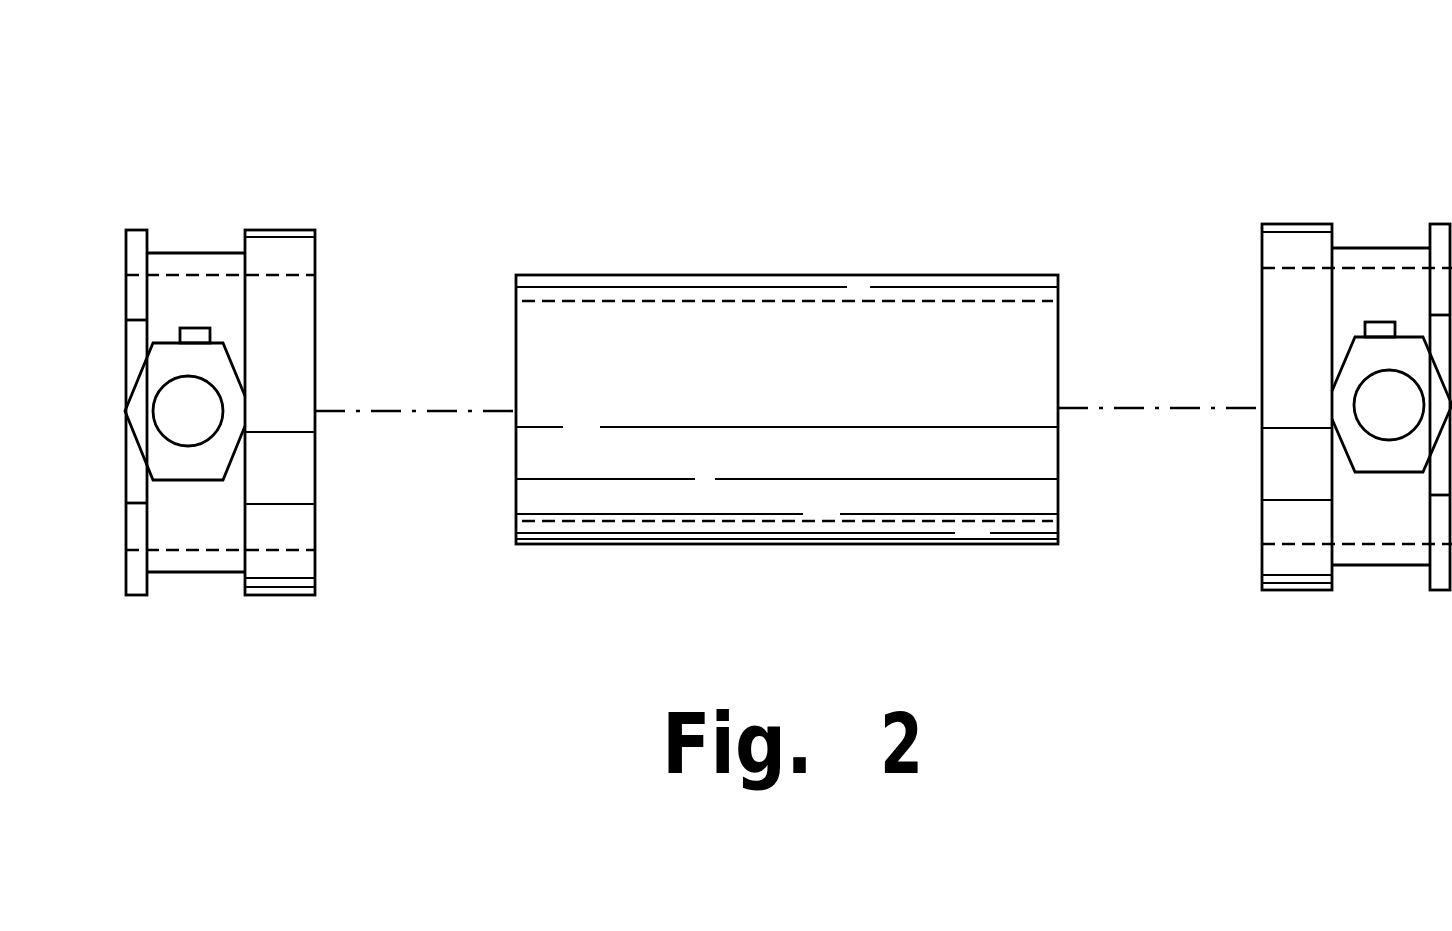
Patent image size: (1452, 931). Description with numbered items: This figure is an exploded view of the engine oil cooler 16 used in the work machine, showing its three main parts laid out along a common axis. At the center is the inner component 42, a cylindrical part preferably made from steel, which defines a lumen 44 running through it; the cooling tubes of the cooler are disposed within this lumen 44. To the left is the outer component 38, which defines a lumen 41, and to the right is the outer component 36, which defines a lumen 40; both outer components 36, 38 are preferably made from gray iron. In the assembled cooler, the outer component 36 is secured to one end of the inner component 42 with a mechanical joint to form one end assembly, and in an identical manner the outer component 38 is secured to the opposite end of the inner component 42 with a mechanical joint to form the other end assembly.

The engine oil cooler 16 is at (1098, 155).
The outer component 36 is at (1380, 260).
The outer component 38 is at (192, 263).
The lumen 40 is at (1285, 269).
The lumen 41 is at (287, 275).
The inner component 42 is at (859, 291).
The lumen 44 is at (541, 302).